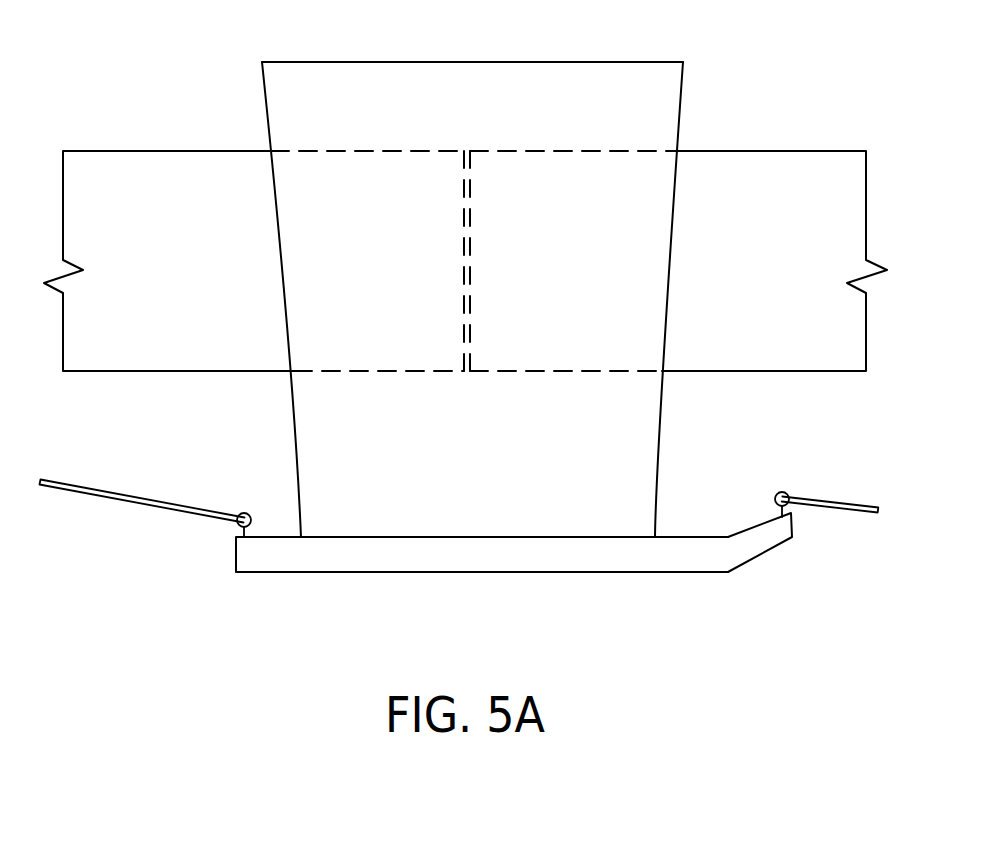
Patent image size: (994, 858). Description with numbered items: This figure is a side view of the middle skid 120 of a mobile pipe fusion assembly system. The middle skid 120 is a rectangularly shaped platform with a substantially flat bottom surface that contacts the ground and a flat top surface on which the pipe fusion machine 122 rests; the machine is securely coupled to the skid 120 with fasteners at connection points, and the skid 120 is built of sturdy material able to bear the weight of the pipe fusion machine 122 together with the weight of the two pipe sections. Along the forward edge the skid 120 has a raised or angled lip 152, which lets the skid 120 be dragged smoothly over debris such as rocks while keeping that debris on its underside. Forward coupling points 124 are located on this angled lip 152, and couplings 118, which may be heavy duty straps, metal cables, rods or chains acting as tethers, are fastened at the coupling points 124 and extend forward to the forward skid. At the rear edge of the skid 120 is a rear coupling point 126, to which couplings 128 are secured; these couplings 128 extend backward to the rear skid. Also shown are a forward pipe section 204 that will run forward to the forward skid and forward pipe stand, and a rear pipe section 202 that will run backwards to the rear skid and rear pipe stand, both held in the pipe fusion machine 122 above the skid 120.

The couplings 118 is at (853, 498).
The middle skid 120 is at (337, 573).
The pipe fusion machine 122 is at (368, 65).
The forward coupling points 124 is at (787, 495).
The rear coupling point 126 is at (242, 515).
The couplings 128 is at (102, 487).
The raised or angled lip 152 is at (757, 543).
The rear pipe section 202 is at (187, 157).
The forward pipe section 204 is at (746, 160).